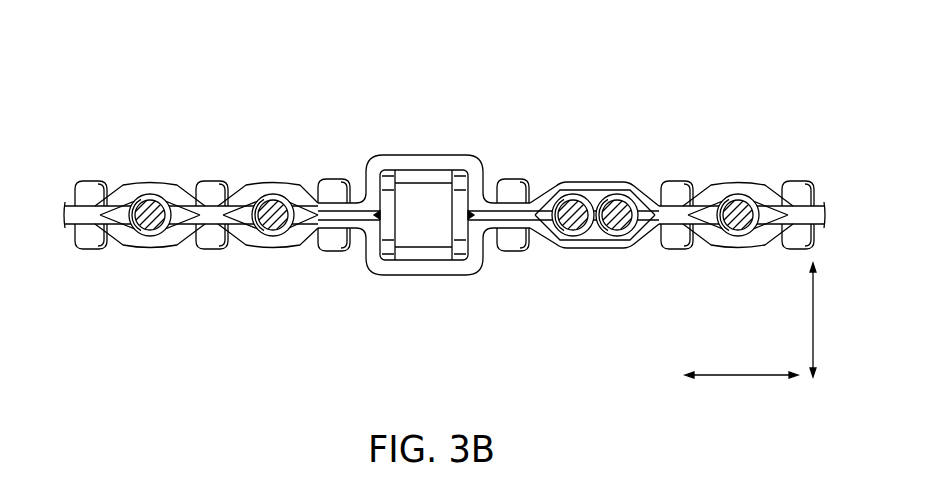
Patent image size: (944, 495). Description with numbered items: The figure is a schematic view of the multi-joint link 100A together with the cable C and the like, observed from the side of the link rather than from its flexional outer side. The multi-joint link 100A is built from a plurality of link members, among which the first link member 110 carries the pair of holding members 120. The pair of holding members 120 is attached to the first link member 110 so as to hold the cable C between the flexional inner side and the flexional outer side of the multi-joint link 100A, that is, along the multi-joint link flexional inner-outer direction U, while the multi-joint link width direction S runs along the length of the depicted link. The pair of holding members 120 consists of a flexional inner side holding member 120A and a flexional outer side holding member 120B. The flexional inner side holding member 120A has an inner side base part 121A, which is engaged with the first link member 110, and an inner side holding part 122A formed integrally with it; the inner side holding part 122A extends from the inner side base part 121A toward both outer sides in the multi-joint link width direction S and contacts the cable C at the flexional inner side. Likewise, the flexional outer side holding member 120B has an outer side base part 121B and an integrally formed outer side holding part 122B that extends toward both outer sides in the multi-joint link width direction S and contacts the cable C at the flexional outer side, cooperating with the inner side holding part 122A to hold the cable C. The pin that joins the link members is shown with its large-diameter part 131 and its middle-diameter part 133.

The multi-joint link 100A is at (186, 63).
The first link member 110 is at (470, 238).
The pair of holding members 120 is at (528, 73).
The flexional inner side holding member 120A is at (400, 108).
The flexional outer side holding member 120B is at (568, 108).
The inner side base part 121A is at (403, 275).
The outer side base part 121B is at (443, 155).
The inner side holding part 122A is at (243, 245).
The outer side holding part 122B is at (588, 206).
The large-diameter part 131 is at (675, 184).
The middle-diameter part 133 is at (675, 248).
The cable C is at (562, 238).
The multi-joint link flexional inner-outer direction U is at (822, 320).
The multi-joint link width direction S is at (741, 388).